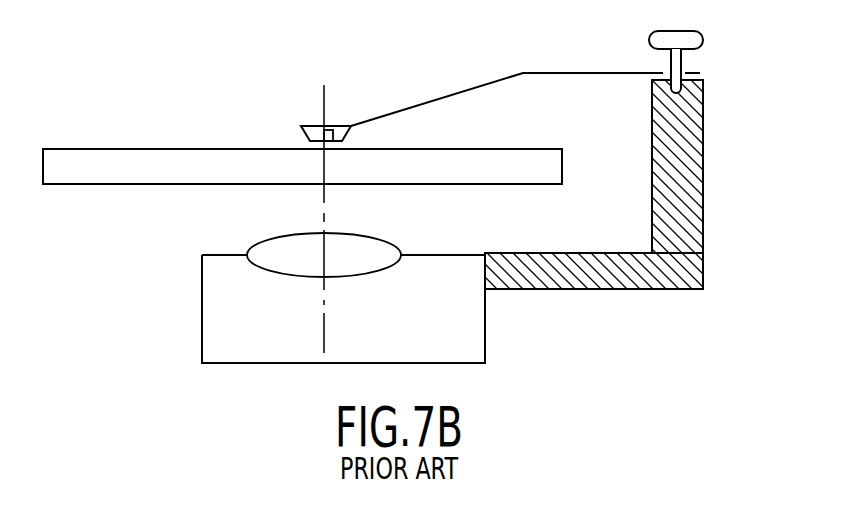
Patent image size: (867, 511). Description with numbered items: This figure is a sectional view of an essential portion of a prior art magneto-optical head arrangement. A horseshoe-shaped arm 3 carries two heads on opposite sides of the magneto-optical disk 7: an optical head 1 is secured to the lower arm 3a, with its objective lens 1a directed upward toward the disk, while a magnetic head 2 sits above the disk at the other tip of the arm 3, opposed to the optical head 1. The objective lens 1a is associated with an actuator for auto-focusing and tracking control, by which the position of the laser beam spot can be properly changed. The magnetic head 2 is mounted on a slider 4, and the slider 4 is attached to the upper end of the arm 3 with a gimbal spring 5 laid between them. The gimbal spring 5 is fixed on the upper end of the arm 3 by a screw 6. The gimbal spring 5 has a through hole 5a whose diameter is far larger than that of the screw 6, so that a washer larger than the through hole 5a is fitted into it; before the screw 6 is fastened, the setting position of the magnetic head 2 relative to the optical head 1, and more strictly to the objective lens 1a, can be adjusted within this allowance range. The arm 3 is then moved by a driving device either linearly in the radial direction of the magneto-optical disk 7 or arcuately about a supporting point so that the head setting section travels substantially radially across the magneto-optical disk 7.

The optical head 1 is at (216, 317).
The objective lens 1a is at (270, 246).
The magnetic head 2 is at (342, 148).
The arm 3 is at (698, 155).
The lower arm 3a is at (587, 289).
The slider 4 is at (306, 125).
The gimbal spring 5 is at (483, 88).
The through hole 5a is at (700, 73).
The screw 6 is at (656, 42).
The magneto-optical disk 7 is at (98, 157).